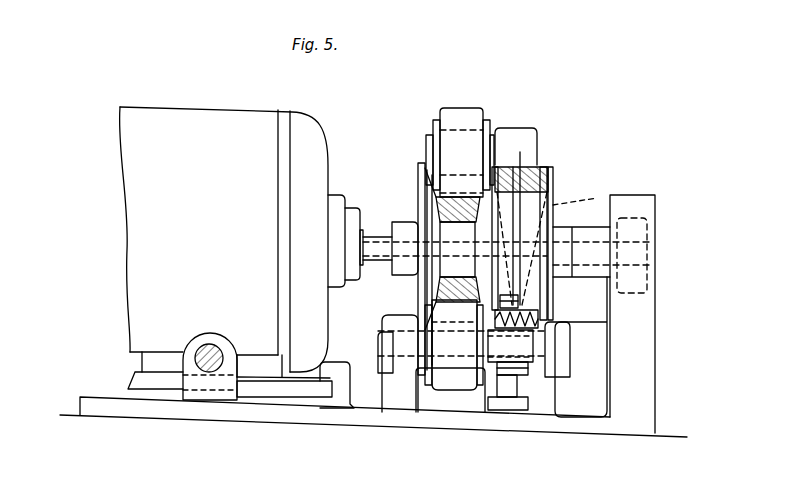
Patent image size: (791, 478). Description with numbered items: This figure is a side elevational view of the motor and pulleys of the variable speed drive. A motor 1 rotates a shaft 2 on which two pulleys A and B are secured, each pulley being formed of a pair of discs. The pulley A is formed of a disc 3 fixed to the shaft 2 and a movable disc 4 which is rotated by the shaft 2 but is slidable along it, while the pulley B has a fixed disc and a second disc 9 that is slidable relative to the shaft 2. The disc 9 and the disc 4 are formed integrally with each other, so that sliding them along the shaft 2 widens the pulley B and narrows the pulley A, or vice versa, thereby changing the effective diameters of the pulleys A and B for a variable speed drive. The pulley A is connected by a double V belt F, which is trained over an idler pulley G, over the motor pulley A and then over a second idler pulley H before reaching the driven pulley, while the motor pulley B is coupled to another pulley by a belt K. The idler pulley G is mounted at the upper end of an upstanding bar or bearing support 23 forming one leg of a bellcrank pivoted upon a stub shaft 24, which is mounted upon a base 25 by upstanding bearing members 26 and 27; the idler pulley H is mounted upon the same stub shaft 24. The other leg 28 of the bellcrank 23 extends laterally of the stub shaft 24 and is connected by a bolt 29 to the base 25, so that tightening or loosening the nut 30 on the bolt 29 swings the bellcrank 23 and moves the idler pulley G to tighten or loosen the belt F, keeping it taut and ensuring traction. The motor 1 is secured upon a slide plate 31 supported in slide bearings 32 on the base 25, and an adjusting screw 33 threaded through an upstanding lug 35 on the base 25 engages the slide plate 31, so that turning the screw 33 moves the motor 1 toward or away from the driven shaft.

The motor 1 is at (176, 97).
The shaft 2 is at (378, 258).
The disc 3 is at (418, 208).
The movable disc 4 is at (472, 228).
The disc 9 is at (581, 198).
The bearing support 23 is at (510, 155).
The stub shaft 24 is at (380, 337).
The base 25 is at (127, 412).
The bearing member 26 is at (555, 391).
The bearing member 27 is at (398, 388).
The leg 28 is at (535, 346).
The bolt 29 is at (520, 303).
The nut 30 is at (538, 322).
The slide plate 31 is at (293, 390).
The slide bearings 32 is at (337, 362).
The adjusting screw 33 is at (222, 346).
The lug 35 is at (196, 334).
The pulley A is at (412, 198).
The pulley B is at (565, 202).
The belt F is at (464, 108).
The idler pulley G is at (432, 125).
The idler pulley H is at (430, 370).
The belt K is at (540, 167).